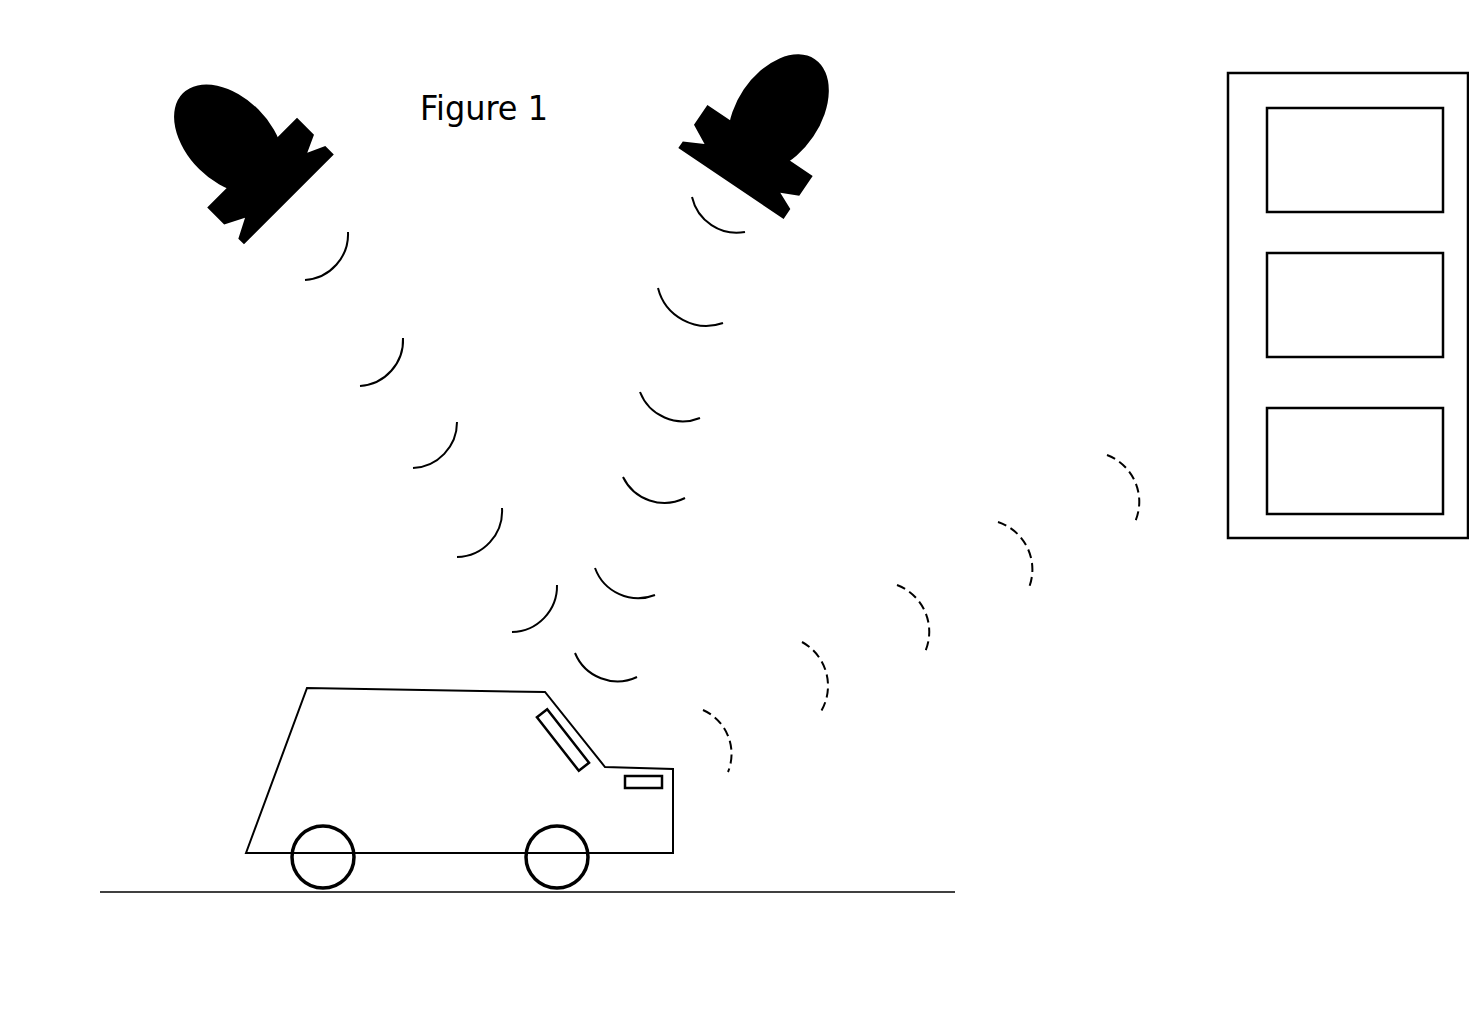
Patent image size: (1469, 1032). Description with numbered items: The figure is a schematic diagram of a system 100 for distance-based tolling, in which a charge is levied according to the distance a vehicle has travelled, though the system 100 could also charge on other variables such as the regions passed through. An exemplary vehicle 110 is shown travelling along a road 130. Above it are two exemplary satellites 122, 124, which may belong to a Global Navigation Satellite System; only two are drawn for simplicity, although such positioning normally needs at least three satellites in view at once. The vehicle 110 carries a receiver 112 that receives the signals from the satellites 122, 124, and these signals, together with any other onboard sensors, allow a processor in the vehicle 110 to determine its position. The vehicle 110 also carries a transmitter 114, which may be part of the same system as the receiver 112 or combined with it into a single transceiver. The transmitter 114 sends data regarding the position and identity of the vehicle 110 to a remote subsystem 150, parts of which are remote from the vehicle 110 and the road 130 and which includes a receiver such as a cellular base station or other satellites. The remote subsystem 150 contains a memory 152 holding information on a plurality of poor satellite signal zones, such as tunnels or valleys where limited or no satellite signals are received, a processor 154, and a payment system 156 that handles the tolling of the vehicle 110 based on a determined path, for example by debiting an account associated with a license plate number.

The system 100 is at (1230, 752).
The vehicle 110 is at (302, 732).
The receiver 112 is at (572, 737).
The transmitter 114 is at (647, 782).
The satellite 122 is at (822, 140).
The satellite 124 is at (193, 150).
The road 130 is at (825, 890).
The remote subsystem 150 is at (1269, 379).
The memory 152 is at (1291, 181).
The processor 154 is at (1287, 320).
The payment system 156 is at (1287, 458).